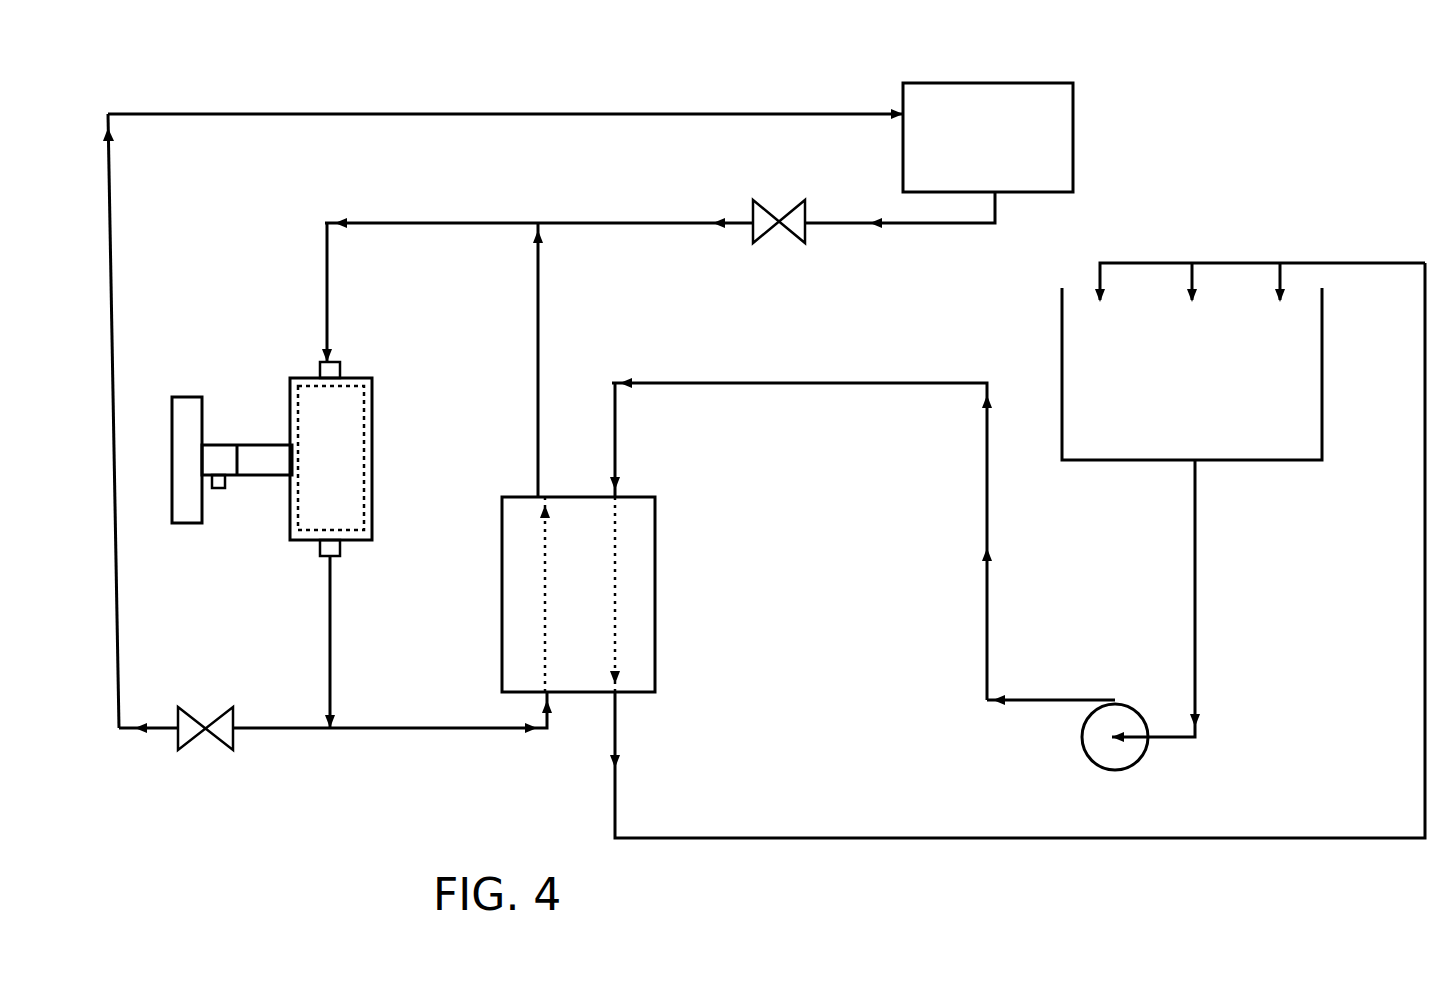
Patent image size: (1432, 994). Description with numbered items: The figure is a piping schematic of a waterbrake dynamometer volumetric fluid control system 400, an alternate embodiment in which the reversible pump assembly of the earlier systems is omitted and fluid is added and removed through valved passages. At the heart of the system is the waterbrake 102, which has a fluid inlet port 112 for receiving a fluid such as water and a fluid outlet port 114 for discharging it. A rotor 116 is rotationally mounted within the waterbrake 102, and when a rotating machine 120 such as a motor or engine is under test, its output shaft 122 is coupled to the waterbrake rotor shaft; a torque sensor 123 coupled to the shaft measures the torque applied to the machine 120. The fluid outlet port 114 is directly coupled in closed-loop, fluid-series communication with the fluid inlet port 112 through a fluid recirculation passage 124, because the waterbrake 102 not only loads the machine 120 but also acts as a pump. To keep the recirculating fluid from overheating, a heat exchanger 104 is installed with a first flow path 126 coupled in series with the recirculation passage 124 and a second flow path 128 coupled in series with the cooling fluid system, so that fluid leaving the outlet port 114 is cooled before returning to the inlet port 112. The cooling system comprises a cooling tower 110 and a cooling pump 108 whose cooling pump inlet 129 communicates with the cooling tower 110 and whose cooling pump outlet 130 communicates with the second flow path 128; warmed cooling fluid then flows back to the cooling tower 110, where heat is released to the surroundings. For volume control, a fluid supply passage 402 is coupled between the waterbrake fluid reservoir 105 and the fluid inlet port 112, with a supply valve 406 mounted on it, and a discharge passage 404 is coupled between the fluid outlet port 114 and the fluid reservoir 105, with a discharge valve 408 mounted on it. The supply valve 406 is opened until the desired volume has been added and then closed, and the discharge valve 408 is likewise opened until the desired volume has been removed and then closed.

The waterbrake dynamometer volumetric fluid control system 400 is at (1268, 115).
The waterbrake fluid reservoir 105 is at (905, 85).
The fluid supply passage 402 is at (634, 223).
The supply valve 406 is at (765, 243).
The fluid recirculation passage 124 is at (387, 258).
The rotating machine 120 is at (172, 402).
The output shaft 122 is at (205, 447).
The torque sensor 123 is at (216, 490).
The fluid inlet port 112 is at (340, 372).
The waterbrake 102 is at (372, 410).
The rotor 116 is at (362, 478).
The fluid outlet port 114 is at (340, 558).
The discharge passage 404 is at (302, 728).
The discharge valve 408 is at (190, 748).
The heat exchanger 104 is at (655, 543).
The first flow path 126 is at (545, 652).
The second flow path 128 is at (617, 652).
The cooling tower 110 is at (1322, 373).
The cooling pump outlet 130 is at (1047, 700).
The cooling pump 108 is at (1124, 704).
The cooling pump inlet 129 is at (1170, 737).